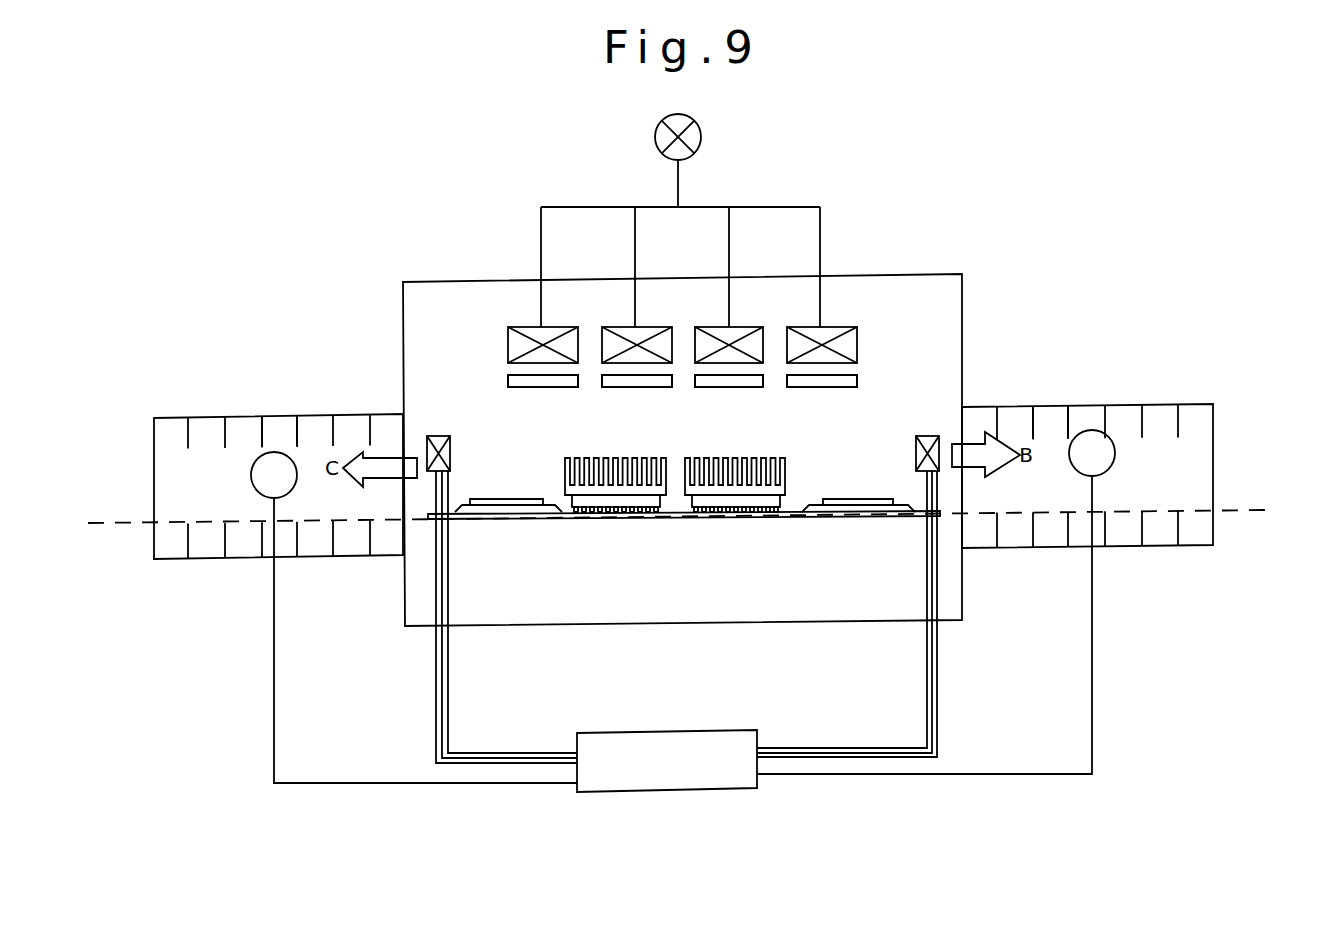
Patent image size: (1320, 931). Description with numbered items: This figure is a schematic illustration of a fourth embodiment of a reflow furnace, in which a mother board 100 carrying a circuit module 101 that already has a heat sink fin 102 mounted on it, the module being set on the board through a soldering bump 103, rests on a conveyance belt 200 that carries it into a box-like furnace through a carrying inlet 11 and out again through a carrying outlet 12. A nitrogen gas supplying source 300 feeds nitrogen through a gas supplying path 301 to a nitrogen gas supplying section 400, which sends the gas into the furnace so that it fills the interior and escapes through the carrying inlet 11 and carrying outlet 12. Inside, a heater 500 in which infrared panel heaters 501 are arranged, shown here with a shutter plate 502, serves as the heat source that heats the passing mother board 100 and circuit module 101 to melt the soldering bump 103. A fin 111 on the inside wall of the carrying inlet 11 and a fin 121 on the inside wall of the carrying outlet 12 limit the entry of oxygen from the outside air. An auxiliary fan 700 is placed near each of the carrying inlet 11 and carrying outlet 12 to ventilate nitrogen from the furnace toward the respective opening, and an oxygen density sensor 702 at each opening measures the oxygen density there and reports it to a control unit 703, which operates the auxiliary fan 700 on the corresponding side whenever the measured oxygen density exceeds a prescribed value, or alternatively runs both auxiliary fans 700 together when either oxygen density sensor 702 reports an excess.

The nitrogen gas supplying source 300 is at (700, 135).
The gas supplying path 301 is at (820, 237).
The nitrogen gas supplying section 400 is at (868, 337).
The heater 500 is at (868, 381).
The infrared panel heater 501 is at (573, 387).
The shutter plate 502 is at (760, 387).
The auxiliary fan 700 is at (440, 436).
The oxygen density sensor 702 is at (250, 468).
The control unit 703 is at (720, 731).
The carrying outlet 12 is at (248, 417).
The fin 121 is at (297, 437).
The carrying inlet 11 is at (1088, 405).
The fin 111 is at (1070, 430).
The conveyance belt 200 is at (1235, 508).
The mother board 100 is at (940, 509).
The heat sink fin 102 is at (643, 458).
The circuit module 101 is at (575, 500).
The soldering bump 103 is at (638, 515).